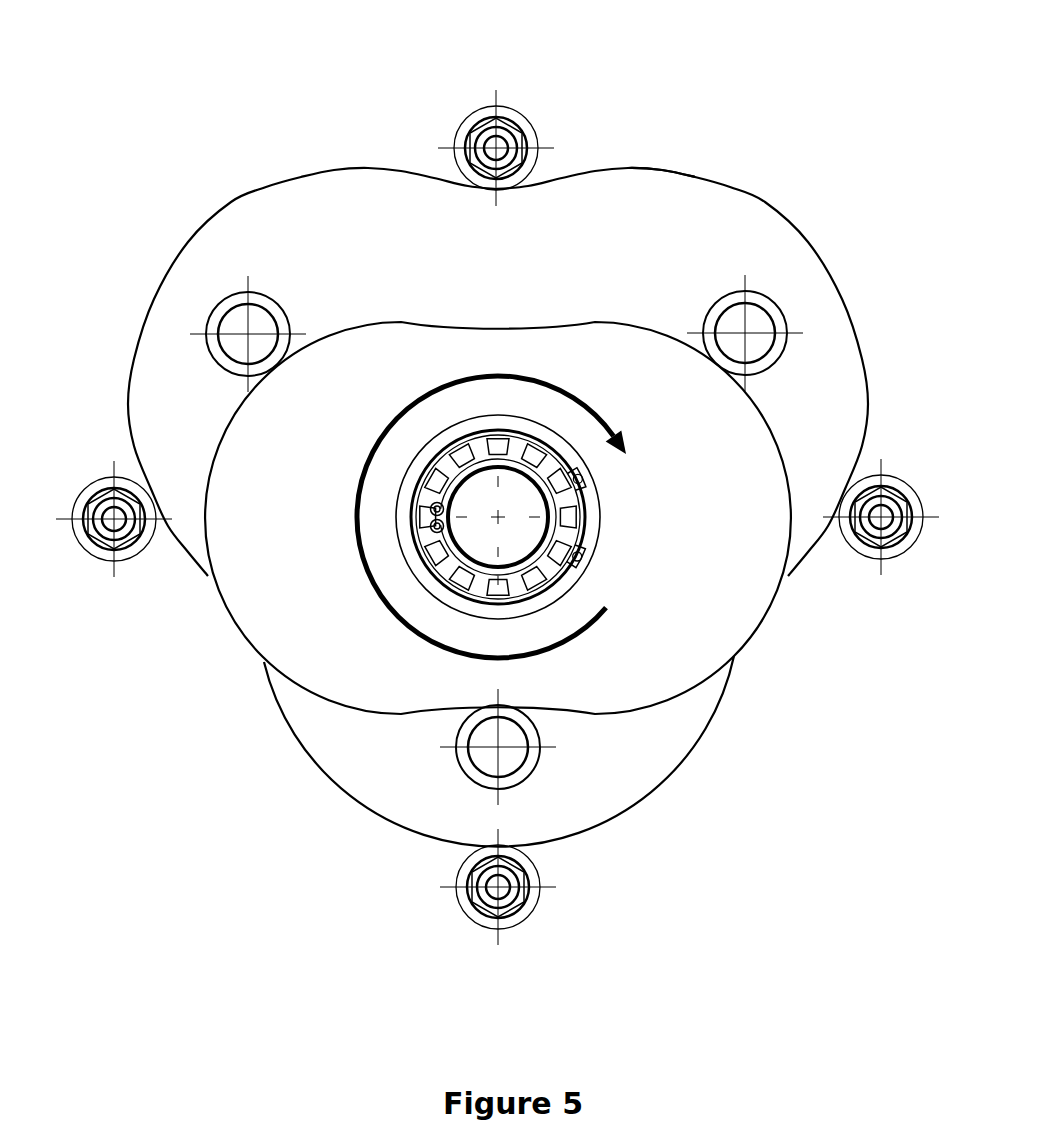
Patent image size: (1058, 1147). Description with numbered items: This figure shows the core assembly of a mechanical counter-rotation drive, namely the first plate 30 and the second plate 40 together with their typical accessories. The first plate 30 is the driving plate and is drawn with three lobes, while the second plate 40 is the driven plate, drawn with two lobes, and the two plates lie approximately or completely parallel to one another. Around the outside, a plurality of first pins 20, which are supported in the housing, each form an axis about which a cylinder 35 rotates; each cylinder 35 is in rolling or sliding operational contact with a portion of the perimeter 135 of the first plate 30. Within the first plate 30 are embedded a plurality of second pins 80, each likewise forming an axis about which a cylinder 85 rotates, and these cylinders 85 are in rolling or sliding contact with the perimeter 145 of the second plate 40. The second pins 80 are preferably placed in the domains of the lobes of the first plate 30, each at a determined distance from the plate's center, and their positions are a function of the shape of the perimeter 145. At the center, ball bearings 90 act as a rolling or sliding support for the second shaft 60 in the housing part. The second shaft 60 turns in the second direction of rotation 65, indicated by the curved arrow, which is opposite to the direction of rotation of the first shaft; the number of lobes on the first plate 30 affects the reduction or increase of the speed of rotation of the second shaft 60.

The first pins 20 is at (522, 127).
The first plate 30 is at (674, 215).
The cylinder 35 is at (464, 129).
The second plate 40 is at (695, 570).
The second shaft 60 is at (483, 541).
The second direction of rotation 65 is at (508, 517).
The second pins 80 is at (229, 346).
The cylinder 85 is at (222, 300).
The ball bearings 90 is at (483, 447).
The perimeter of the first plate 135 is at (660, 168).
The perimeter of the second plate 145 is at (343, 712).